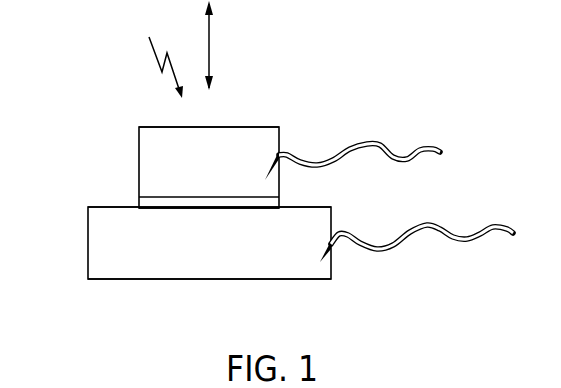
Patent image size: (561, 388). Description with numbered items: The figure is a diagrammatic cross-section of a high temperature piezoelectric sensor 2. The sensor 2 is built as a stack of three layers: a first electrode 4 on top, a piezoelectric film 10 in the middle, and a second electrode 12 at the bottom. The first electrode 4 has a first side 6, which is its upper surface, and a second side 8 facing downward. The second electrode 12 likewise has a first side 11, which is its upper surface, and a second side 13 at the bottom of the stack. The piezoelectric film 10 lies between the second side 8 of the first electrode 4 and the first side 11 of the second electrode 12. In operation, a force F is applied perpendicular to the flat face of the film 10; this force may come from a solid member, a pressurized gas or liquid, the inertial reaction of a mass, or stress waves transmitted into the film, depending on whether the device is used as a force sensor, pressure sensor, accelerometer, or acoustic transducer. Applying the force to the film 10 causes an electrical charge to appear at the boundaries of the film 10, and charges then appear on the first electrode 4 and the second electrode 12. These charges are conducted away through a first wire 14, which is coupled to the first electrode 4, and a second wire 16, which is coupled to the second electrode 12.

The high temperature piezoelectric sensor 2 is at (160, 54).
The applied force F is at (210, 43).
The first electrode 4 is at (148, 126).
The first side 6 is at (279, 126).
The second side 8 is at (279, 196).
The piezoelectric film 10 is at (185, 208).
The first side 11 is at (332, 207).
The second electrode 12 is at (88, 247).
The second side 13 is at (325, 279).
The first wire 14 is at (400, 150).
The second wire 16 is at (482, 238).